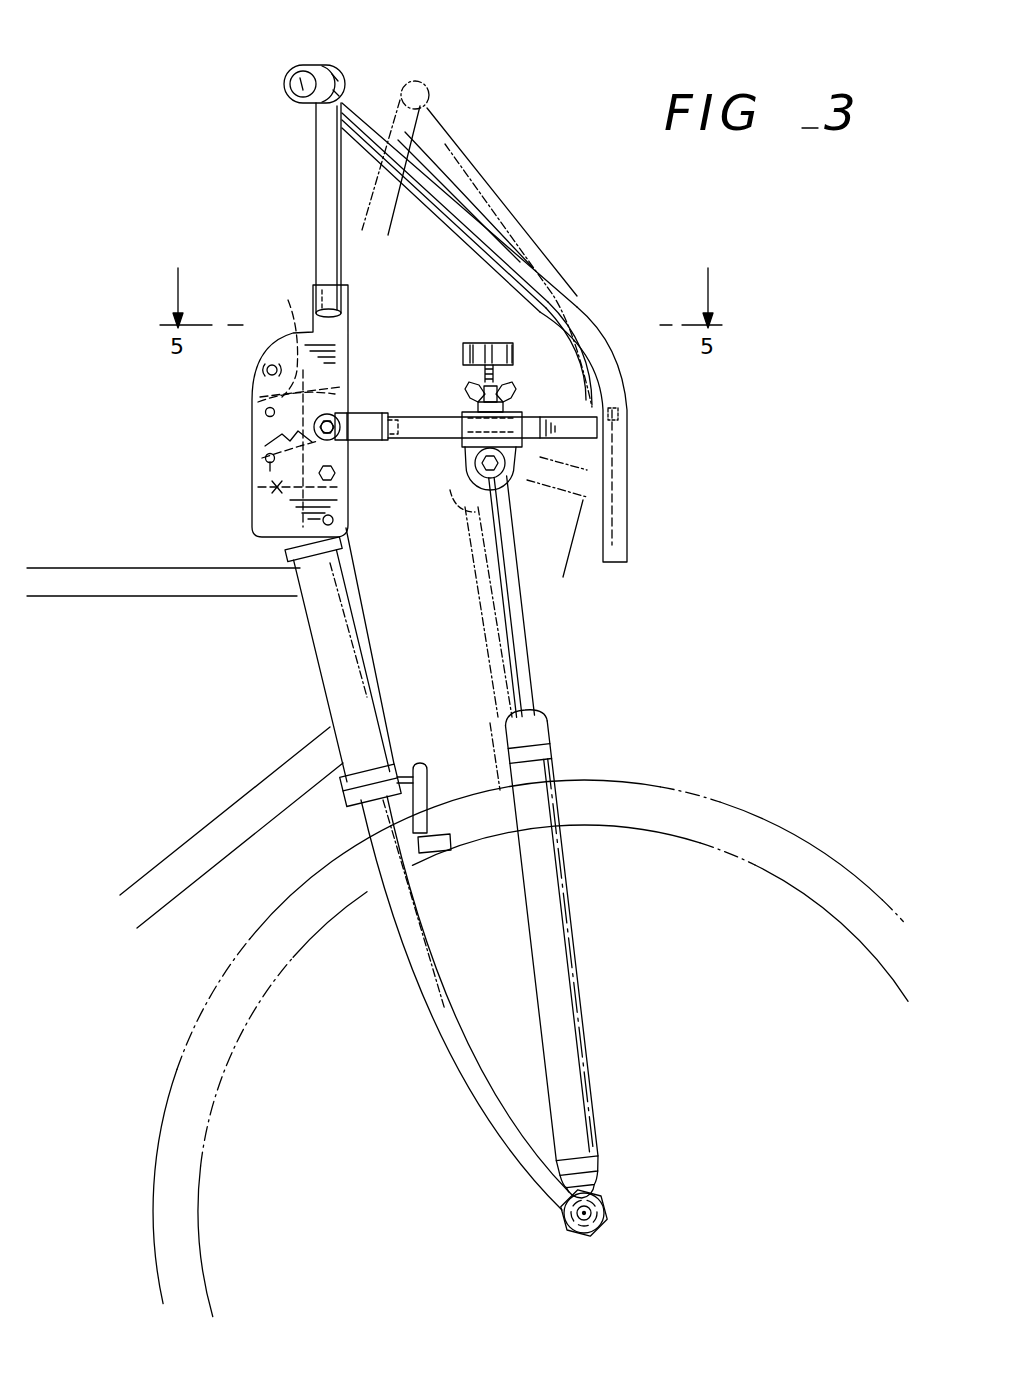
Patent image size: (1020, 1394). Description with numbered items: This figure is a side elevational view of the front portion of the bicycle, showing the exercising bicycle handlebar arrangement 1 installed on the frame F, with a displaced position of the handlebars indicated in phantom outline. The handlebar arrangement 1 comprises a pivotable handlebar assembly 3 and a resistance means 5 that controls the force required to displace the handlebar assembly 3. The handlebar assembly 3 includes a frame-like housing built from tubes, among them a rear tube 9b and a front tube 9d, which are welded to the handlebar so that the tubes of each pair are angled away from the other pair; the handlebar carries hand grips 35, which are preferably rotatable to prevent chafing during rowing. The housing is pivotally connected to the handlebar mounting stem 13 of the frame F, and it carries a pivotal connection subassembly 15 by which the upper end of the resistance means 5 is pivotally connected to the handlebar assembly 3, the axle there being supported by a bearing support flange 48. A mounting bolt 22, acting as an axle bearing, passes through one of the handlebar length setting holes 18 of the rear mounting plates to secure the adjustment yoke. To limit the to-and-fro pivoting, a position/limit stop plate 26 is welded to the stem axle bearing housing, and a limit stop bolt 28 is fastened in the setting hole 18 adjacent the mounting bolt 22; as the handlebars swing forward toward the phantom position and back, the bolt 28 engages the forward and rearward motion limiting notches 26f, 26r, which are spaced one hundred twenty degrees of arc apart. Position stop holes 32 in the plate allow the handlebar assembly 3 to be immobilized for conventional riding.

The exercising bicycle handlebar arrangement 1 is at (220, 175).
The pivotable handlebar assembly 3 is at (364, 102).
The resistance means 5 is at (537, 712).
The rear tube 9b is at (318, 196).
The front tube 9d is at (587, 311).
The handlebar mounting stem 13 is at (256, 490).
The pivotal connection subassembly 15 is at (457, 394).
The handlebar length setting holes 18 is at (335, 521).
The mounting bolt 22 is at (341, 418).
The position/limit stop plate 26 is at (258, 400).
The forward motion limiting notch 26f is at (362, 412).
The rearward motion limiting notch 26r is at (297, 330).
The limit stop bolt 28 is at (336, 477).
The position stop holes 32 is at (265, 413).
The hand grips 35 is at (332, 64).
The outer bearing support flange 48 is at (466, 452).
The frame F is at (226, 604).